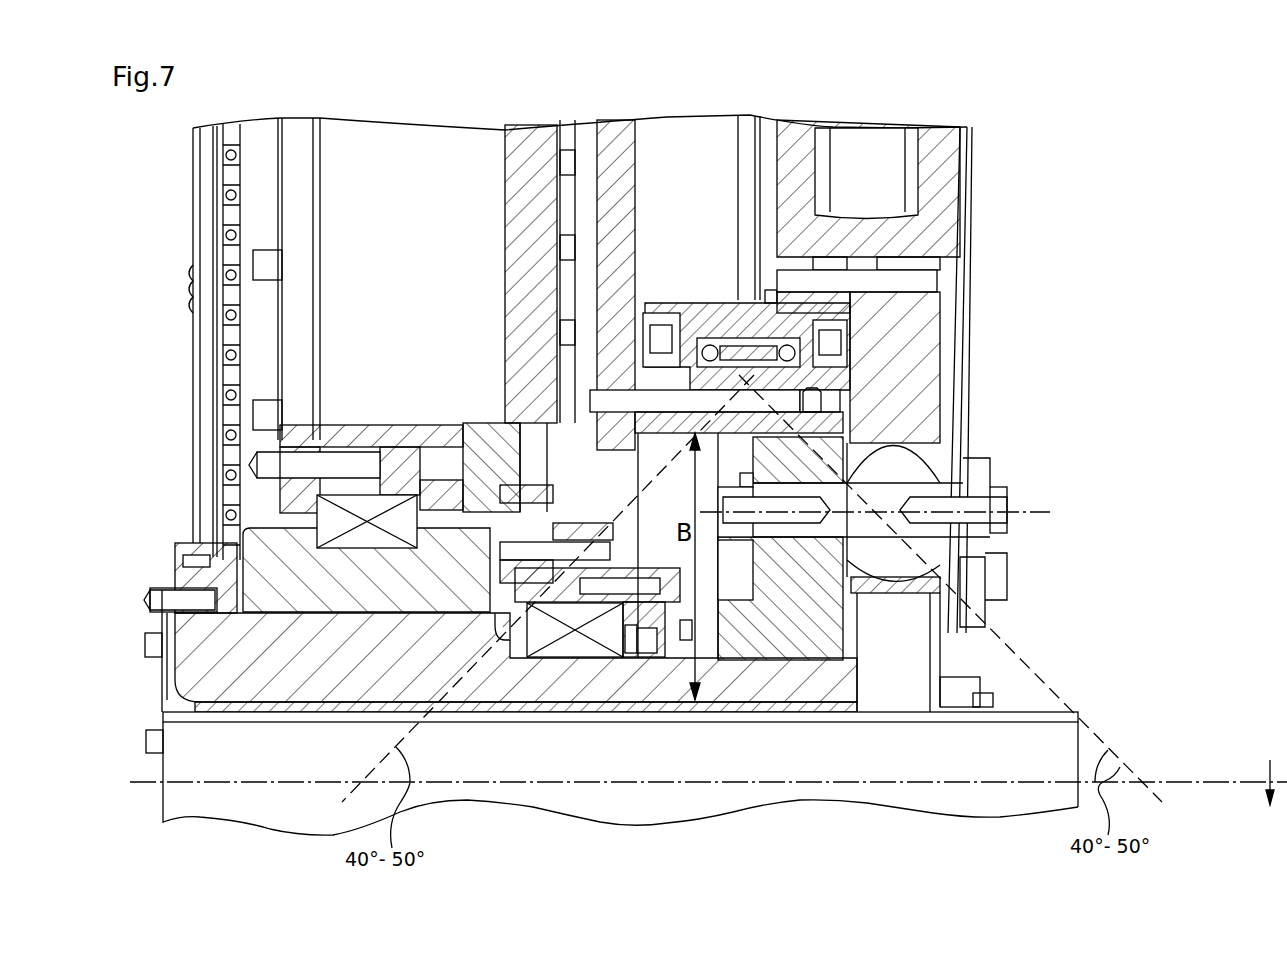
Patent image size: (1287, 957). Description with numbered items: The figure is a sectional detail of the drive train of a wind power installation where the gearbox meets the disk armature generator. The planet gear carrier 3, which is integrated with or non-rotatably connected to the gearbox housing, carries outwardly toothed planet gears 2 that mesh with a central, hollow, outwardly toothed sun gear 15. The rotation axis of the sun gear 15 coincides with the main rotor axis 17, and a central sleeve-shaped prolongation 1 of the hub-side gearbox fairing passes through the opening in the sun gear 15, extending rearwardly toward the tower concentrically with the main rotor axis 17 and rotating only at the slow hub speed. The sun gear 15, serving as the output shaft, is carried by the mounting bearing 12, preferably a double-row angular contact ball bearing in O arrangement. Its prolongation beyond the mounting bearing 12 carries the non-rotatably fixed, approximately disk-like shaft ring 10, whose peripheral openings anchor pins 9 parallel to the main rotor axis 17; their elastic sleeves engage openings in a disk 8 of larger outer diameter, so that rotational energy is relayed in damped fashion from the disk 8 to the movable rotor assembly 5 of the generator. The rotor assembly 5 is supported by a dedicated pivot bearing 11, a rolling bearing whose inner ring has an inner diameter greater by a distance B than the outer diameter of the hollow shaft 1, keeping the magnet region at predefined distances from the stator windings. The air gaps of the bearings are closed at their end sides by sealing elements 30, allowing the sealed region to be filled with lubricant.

The sleeve-shaped prolongation 1 is at (168, 802).
The planet gear 2 is at (398, 170).
The planet gear carrier 3 is at (526, 130).
The rotor assembly 5 is at (866, 160).
The disk 8 is at (930, 318).
The pin 9 is at (910, 480).
The shaft ring 10 is at (787, 635).
The pivot bearing 11 is at (738, 335).
The mounting bearing 12 is at (581, 658).
The sun gear 15 is at (305, 660).
The main rotor axis 17 is at (1270, 810).
The sealing element 30 is at (657, 323).